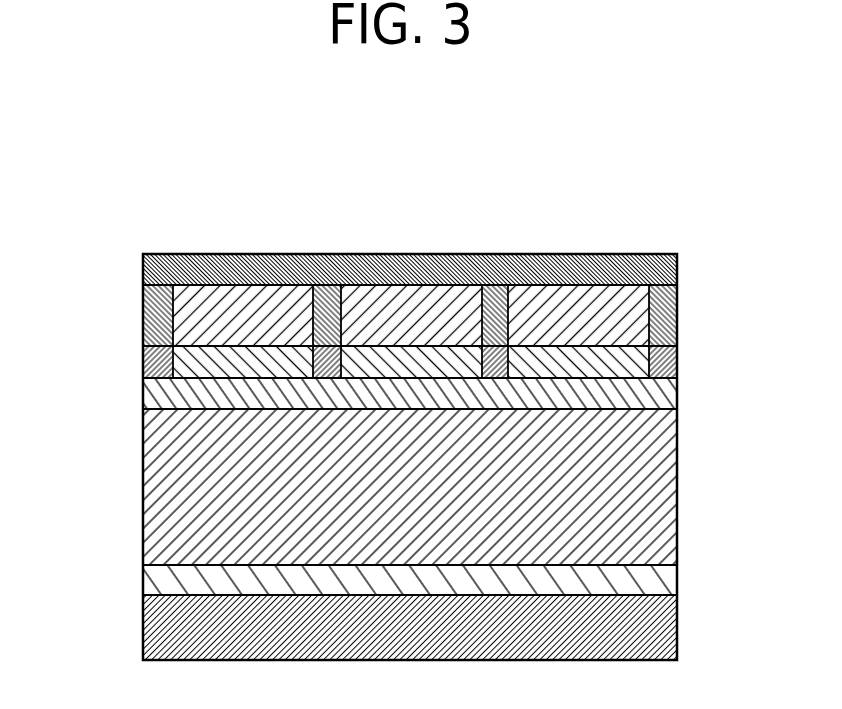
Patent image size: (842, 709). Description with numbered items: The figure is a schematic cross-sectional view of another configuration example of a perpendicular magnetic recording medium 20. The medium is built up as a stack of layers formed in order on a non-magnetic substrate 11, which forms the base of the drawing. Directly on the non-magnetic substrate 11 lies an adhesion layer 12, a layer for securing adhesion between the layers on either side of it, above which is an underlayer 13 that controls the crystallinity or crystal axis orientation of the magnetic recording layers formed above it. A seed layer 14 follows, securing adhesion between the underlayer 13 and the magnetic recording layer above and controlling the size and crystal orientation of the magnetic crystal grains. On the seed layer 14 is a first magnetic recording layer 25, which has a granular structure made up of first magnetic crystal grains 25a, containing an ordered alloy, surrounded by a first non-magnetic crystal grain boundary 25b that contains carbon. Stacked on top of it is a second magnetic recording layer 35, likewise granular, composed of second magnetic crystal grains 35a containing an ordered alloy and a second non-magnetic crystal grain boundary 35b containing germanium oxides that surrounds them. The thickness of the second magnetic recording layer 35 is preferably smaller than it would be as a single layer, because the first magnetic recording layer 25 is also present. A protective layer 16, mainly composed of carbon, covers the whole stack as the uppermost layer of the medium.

The non-magnetic substrate 11 is at (145, 638).
The adhesion layer 12 is at (145, 584).
The underlayer 13 is at (145, 490).
The seed layer 14 is at (143, 404).
The protective layer 16 is at (143, 268).
The perpendicular magnetic recording medium 20 is at (670, 152).
The first magnetic recording layer 25 is at (406, 378).
The first magnetic crystal grains 25a is at (645, 372).
The first non-magnetic crystal grain boundary 25b is at (670, 366).
The second magnetic recording layer 35 is at (406, 309).
The second magnetic crystal grains 35a is at (640, 307).
The second non-magnetic crystal grain boundary 35b is at (668, 327).